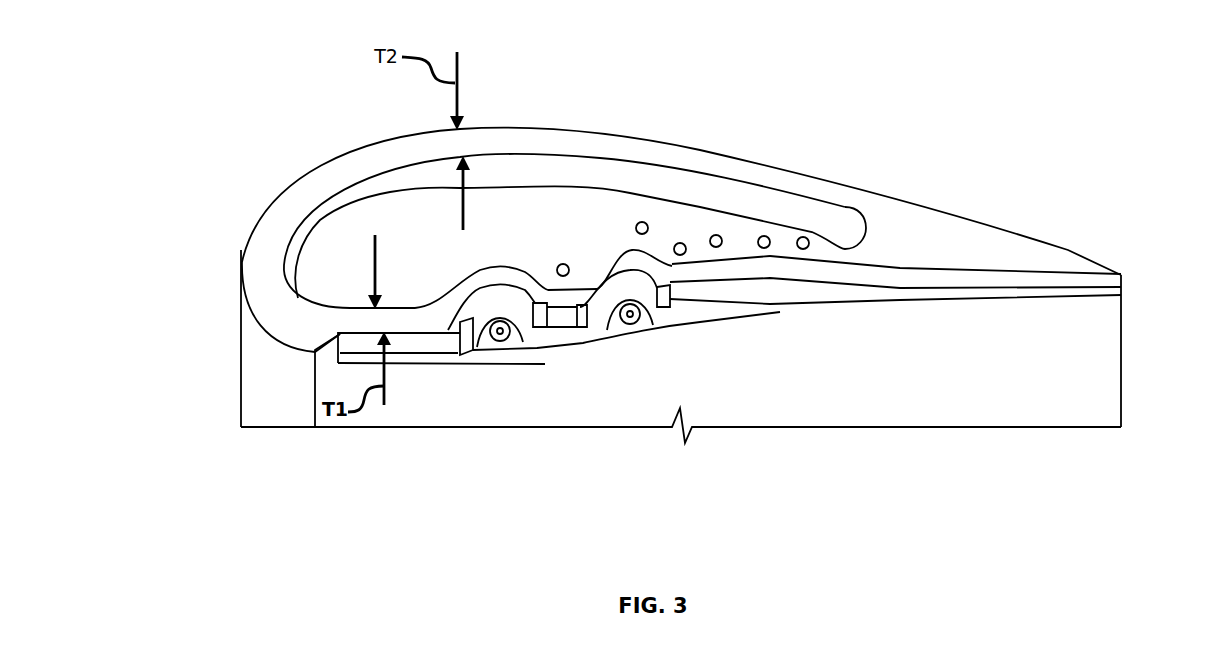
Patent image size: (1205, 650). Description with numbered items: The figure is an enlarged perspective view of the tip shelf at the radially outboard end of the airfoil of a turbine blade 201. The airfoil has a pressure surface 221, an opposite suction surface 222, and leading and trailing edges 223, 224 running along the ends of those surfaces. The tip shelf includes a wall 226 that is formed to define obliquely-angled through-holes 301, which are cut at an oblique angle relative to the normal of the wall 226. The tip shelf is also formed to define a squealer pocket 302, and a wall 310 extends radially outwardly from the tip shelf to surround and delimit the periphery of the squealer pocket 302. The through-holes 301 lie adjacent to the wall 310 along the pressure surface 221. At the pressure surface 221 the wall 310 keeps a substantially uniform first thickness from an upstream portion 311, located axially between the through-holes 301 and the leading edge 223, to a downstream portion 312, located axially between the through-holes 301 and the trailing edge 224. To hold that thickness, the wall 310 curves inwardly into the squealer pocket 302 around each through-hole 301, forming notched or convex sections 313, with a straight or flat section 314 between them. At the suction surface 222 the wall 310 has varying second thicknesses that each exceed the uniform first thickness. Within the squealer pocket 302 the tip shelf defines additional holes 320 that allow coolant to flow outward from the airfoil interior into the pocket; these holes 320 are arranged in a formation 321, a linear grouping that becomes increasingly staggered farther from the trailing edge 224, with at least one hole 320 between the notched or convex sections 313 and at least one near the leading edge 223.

The turbine blade 201 is at (232, 300).
The pressure surface 221 is at (968, 340).
The suction surface 222 is at (533, 130).
The leading edge 223 is at (270, 387).
The trailing edge 224 is at (1123, 353).
The wall 226 is at (450, 325).
The obliquely-angled through-holes 301 is at (545, 348).
The squealer pocket 302 is at (673, 223).
The wall 310 is at (407, 322).
The upstream portion 311 is at (361, 321).
The downstream portion 312 is at (777, 265).
The notched or convex sections 313 is at (610, 253).
The straight or flat section 314 is at (563, 317).
The additional holes 320 is at (764, 236).
The formation 321 is at (820, 258).